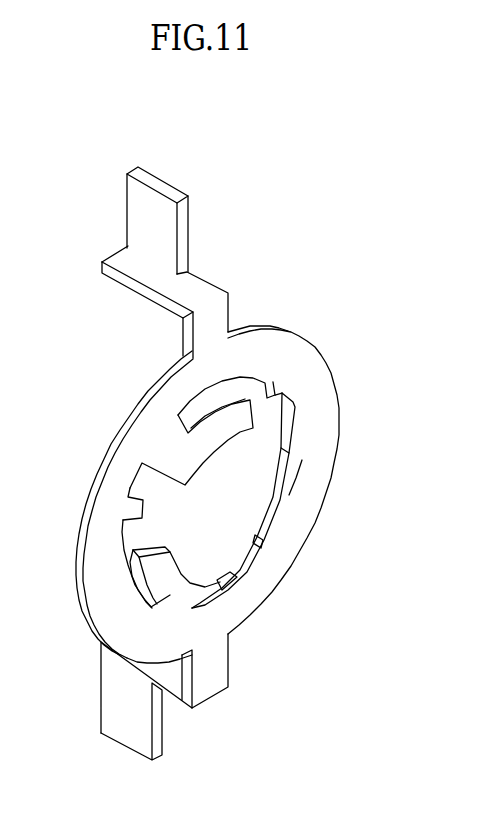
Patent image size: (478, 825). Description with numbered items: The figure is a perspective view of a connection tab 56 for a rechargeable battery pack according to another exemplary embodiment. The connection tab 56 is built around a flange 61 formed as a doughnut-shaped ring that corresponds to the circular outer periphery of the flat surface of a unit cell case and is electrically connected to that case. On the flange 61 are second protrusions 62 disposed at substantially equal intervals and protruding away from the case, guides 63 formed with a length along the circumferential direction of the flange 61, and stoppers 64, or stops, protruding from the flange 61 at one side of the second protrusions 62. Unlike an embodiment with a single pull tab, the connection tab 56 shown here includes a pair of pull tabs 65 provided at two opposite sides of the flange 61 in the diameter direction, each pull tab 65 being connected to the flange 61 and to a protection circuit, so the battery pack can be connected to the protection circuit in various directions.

The connection tab 56 is at (327, 202).
The flange 61 is at (322, 388).
The second protrusion 62 is at (167, 442).
The guide 63 is at (160, 567).
The stopper 64 is at (138, 510).
The pull tab 65 is at (128, 263).